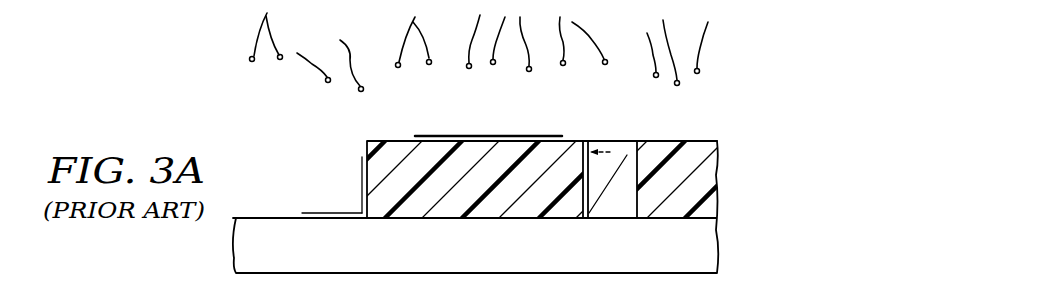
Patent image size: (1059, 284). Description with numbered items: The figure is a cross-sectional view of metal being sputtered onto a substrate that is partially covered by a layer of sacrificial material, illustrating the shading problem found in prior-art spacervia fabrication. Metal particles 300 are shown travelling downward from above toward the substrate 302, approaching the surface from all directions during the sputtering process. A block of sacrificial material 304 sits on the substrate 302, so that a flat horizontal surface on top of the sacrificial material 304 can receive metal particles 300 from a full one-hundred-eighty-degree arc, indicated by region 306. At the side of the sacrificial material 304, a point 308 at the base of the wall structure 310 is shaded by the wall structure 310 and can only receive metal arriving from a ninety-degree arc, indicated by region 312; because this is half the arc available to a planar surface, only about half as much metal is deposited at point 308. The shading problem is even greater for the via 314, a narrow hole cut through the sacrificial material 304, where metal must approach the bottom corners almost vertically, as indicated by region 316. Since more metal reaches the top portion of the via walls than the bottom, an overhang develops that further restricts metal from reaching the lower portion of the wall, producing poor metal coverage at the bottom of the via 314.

The metal particles 300 is at (240, 56).
The substrate 302 is at (717, 248).
The sacrificial material 304 is at (717, 172).
The region 306 is at (540, 130).
The point 308 is at (367, 219).
The wall structure 310 is at (367, 142).
The region 312 is at (354, 167).
The via 314 is at (636, 131).
The region 316 is at (618, 152).